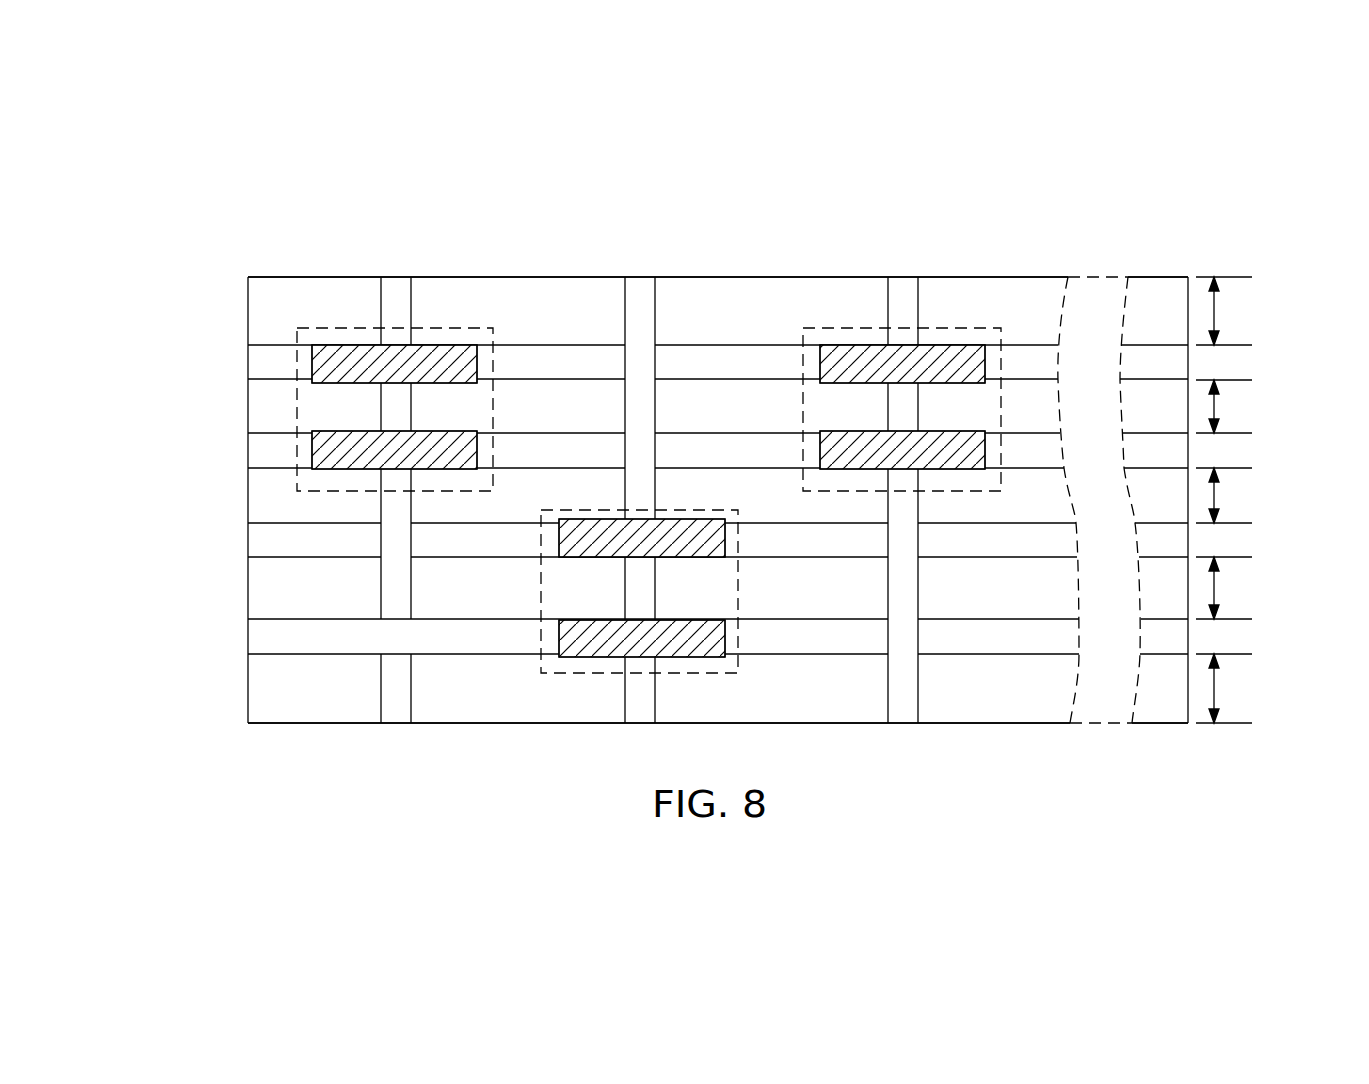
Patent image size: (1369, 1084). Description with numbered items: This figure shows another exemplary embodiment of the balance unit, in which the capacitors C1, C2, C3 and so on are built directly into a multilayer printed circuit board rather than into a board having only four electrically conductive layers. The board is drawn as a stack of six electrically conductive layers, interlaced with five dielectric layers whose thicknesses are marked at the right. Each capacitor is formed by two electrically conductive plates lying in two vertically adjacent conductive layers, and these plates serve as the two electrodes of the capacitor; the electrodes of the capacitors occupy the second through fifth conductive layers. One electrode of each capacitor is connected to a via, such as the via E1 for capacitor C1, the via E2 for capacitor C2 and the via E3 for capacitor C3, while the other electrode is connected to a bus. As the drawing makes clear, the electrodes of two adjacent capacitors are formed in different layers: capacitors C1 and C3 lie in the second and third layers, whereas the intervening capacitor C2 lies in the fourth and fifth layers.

The capacitor C1 is at (333, 328).
The capacitor C2 is at (563, 517).
The capacitor C3 is at (840, 328).
The via E1 is at (392, 277).
The via E2 is at (635, 277).
The via E3 is at (900, 277).